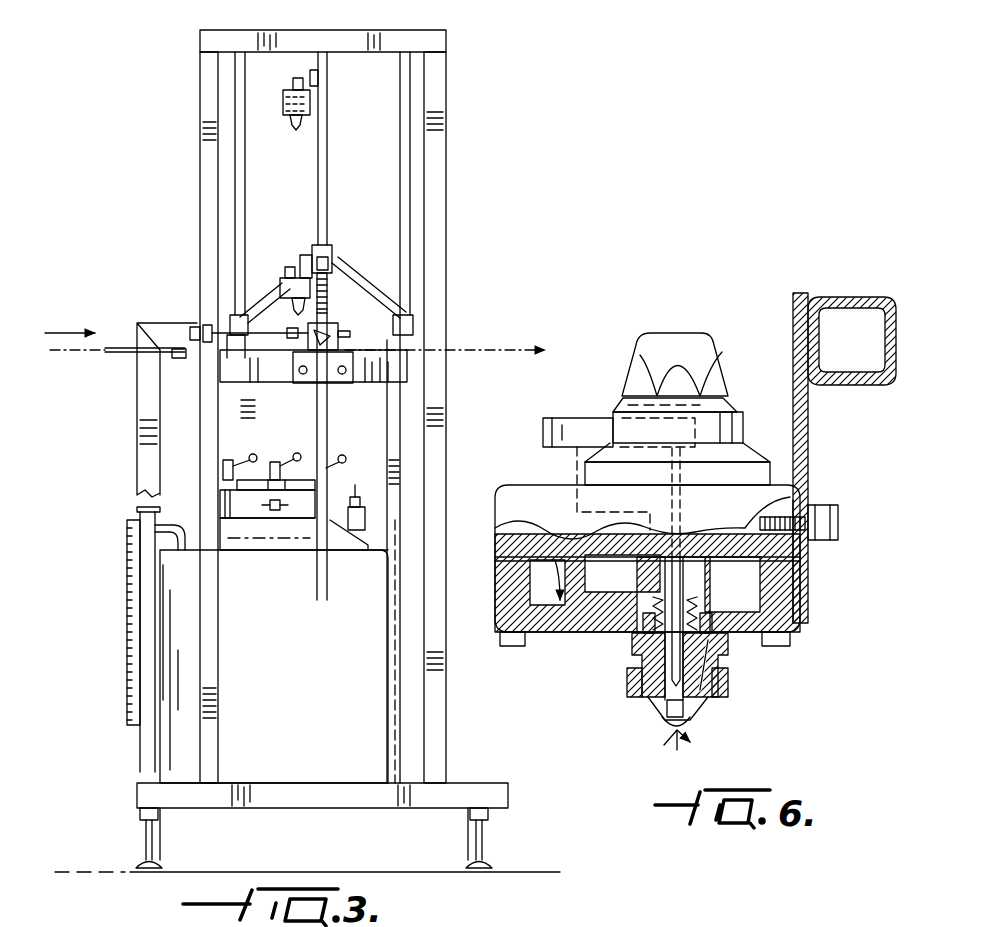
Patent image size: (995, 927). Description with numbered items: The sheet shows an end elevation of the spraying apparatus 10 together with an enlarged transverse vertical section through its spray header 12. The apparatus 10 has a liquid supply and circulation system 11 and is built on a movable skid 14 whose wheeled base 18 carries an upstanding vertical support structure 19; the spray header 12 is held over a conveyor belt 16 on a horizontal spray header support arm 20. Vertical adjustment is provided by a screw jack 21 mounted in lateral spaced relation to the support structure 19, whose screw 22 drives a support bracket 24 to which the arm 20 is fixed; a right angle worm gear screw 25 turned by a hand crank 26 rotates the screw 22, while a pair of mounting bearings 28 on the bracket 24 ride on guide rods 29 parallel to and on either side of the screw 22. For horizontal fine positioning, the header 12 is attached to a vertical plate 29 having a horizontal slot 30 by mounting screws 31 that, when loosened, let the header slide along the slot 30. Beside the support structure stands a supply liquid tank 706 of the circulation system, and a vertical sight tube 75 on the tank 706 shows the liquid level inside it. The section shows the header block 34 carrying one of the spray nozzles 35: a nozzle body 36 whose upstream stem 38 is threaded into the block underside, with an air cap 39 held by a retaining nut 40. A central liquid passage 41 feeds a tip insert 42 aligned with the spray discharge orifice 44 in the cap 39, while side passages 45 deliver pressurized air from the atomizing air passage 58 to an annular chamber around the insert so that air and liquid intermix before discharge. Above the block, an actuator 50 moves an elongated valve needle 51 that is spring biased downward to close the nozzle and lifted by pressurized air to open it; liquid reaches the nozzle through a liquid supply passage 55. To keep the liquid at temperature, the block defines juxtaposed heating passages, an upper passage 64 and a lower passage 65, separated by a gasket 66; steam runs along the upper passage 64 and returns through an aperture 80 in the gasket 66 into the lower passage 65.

In FIG. 3, the spraying apparatus 10 is at (155, 148).
In FIG. 3, the liquid supply and circulation system 11 is at (166, 657).
In FIG. 3, the spray header 12 is at (278, 94).
In FIG. 6, the spray header 12 is at (808, 612).
In FIG. 3, the skid 14 is at (198, 731).
In FIG. 3, the conveyor belt 16 is at (118, 340).
In FIG. 3, the wheeled base 18 is at (345, 808).
In FIG. 3, the vertical support structure 19 is at (436, 105).
In FIG. 3, the spray header support arm 20 is at (334, 257).
In FIG. 6, the spray header support arm 20 is at (851, 297).
In FIG. 3, the screw jack 21 is at (350, 342).
In FIG. 3, the screw 22 is at (328, 295).
In FIG. 3, the support bracket 24 is at (268, 305).
In FIG. 3, the right angle worm gear screw 25 is at (255, 360).
In FIG. 3, the hand crank 26 is at (178, 360).
In FIG. 3, the mounting bearings 28 is at (240, 318).
In FIG. 3, the guide rods 29 is at (237, 166).
In FIG. 6, the guide rods 29 is at (792, 385).
In FIG. 6, the horizontal slot 30 is at (790, 510).
In FIG. 6, the mounting screws 31 is at (840, 518).
In FIG. 6, the header block 34 is at (790, 550).
In FIG. 6, the spray nozzles 35 is at (716, 712).
In FIG. 6, the nozzle body 36 is at (670, 650).
In FIG. 6, the upstream stem 38 is at (662, 602).
In FIG. 6, the air cap 39 is at (660, 722).
In FIG. 6, the retaining nut 40 is at (655, 692).
In FIG. 6, the central liquid passage 41 is at (704, 645).
In FIG. 6, the tip insert 42 is at (665, 735).
In FIG. 6, the spray discharge orifice 44 is at (695, 742).
In FIG. 6, the side passages 45 is at (715, 680).
In FIG. 6, the actuator 50 is at (652, 335).
In FIG. 6, the valve needle 51 is at (700, 565).
In FIG. 6, the liquid supply passage 55 is at (600, 480).
In FIG. 6, the atomizing air passage 58 is at (752, 580).
In FIG. 6, the upper passage 64 is at (545, 555).
In FIG. 6, the lower passage 65 is at (545, 605).
In FIG. 6, the gasket 66 is at (520, 625).
In FIG. 3, the vertical sight tube 75 is at (128, 596).
In FIG. 6, the aperture 80 is at (555, 545).
In FIG. 3, the tank 706 is at (338, 684).